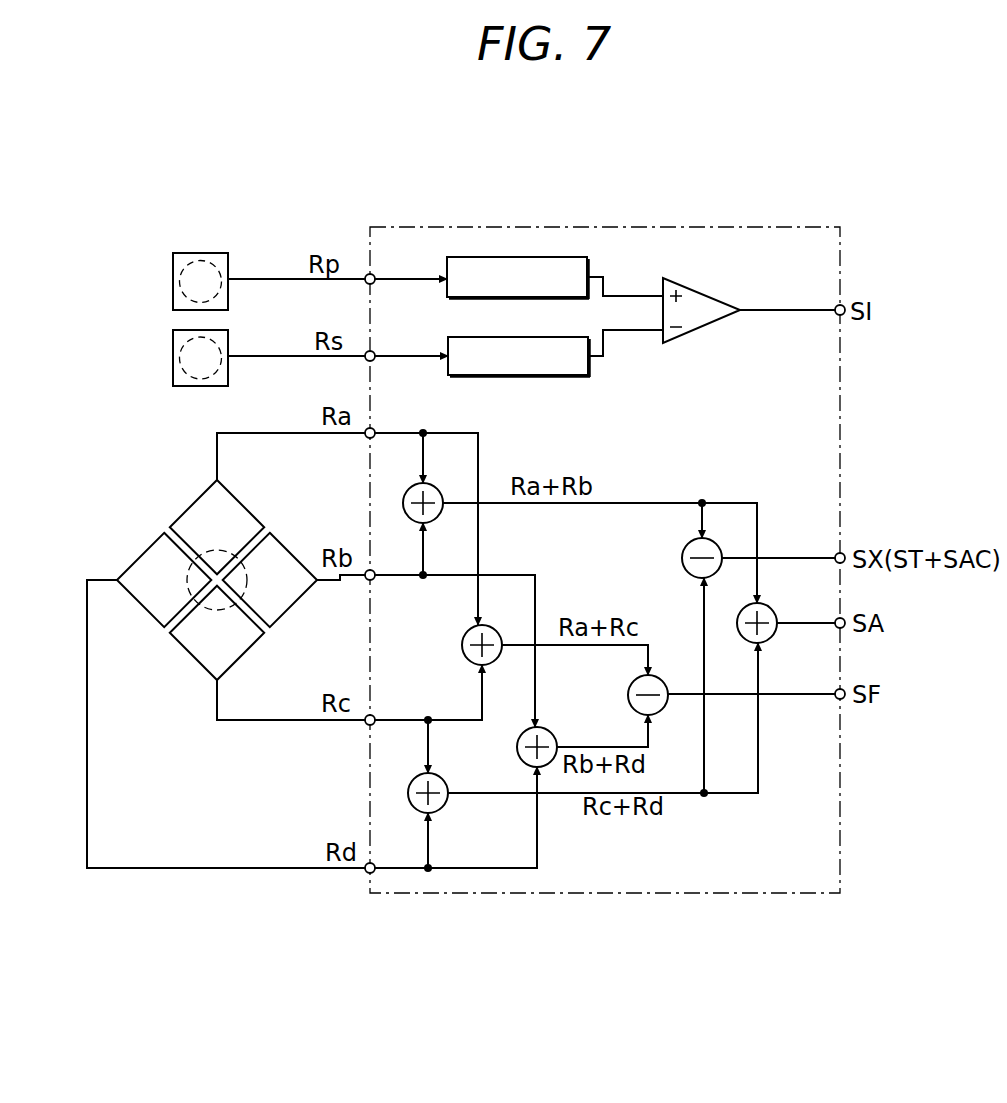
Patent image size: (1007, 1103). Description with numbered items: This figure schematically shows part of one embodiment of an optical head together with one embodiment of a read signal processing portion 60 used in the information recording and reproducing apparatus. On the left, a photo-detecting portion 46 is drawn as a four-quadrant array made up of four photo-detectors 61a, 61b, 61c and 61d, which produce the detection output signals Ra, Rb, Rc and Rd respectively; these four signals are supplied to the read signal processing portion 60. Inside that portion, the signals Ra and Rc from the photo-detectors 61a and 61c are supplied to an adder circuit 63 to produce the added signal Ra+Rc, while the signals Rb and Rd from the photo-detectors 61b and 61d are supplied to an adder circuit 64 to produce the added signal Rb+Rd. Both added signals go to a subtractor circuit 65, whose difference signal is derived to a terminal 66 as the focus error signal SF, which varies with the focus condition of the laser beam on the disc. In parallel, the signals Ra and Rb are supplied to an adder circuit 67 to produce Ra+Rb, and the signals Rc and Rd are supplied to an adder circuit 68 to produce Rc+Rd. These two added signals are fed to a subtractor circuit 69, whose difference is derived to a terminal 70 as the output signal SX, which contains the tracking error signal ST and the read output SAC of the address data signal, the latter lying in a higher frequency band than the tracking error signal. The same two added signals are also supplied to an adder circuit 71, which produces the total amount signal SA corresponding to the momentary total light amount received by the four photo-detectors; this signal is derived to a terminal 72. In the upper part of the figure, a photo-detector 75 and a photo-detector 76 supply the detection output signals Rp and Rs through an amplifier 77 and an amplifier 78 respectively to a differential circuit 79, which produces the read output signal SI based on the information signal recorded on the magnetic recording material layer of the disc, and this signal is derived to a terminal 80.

The photo-detecting portion 46 is at (197, 580).
The photo-detector 61a is at (190, 502).
The photo-detector 61b is at (281, 536).
The photo-detector 61c is at (198, 653).
The photo-detector 61d is at (152, 610).
The photo-detector 75 is at (170, 297).
The photo-detector 76 is at (172, 373).
The amplifier 77 is at (445, 297).
The amplifier 78 is at (447, 376).
The differential circuit 79 is at (712, 338).
The terminal 80 is at (834, 304).
The adder circuit 67 is at (411, 492).
The adder circuit 63 is at (468, 632).
The adder circuit 64 is at (520, 757).
The adder circuit 68 is at (446, 812).
The subtractor circuit 65 is at (630, 690).
The subtractor circuit 69 is at (688, 553).
The adder circuit 71 is at (748, 648).
The terminal 70 is at (836, 552).
The terminal 72 is at (836, 617).
The terminal 66 is at (836, 688).
The read signal processing portion 60 is at (842, 850).